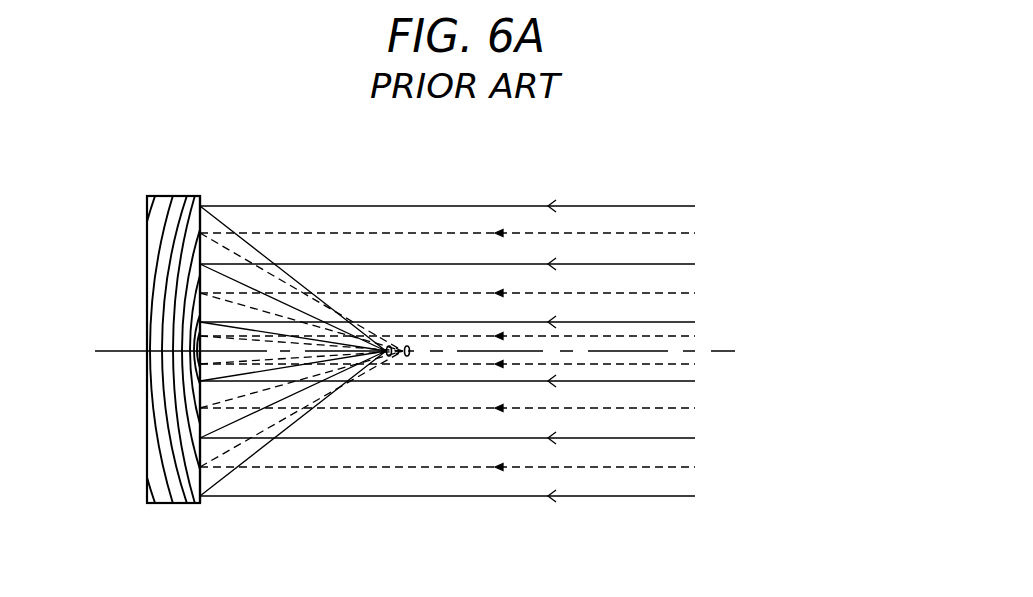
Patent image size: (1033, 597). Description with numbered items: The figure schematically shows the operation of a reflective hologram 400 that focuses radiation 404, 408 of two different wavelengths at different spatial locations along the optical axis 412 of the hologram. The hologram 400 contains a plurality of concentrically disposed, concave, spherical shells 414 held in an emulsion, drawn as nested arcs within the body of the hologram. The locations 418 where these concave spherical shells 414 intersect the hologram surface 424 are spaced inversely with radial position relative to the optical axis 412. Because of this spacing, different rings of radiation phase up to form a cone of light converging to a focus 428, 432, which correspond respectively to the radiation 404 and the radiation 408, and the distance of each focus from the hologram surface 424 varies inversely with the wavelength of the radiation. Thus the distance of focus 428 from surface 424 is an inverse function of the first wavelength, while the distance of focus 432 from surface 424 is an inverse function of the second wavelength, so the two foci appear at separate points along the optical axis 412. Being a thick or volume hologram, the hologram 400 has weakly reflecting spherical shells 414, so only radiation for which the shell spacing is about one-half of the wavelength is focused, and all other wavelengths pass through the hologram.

The reflective hologram 400 is at (114, 470).
The radiation 404 is at (500, 206).
The radiation 408 is at (670, 233).
The optical axis 412 is at (711, 351).
The concave spherical shells 414 is at (162, 233).
The locations 418 is at (200, 200).
The hologram surface 424 is at (200, 197).
The focus 428 is at (391, 357).
The focus 432 is at (408, 357).